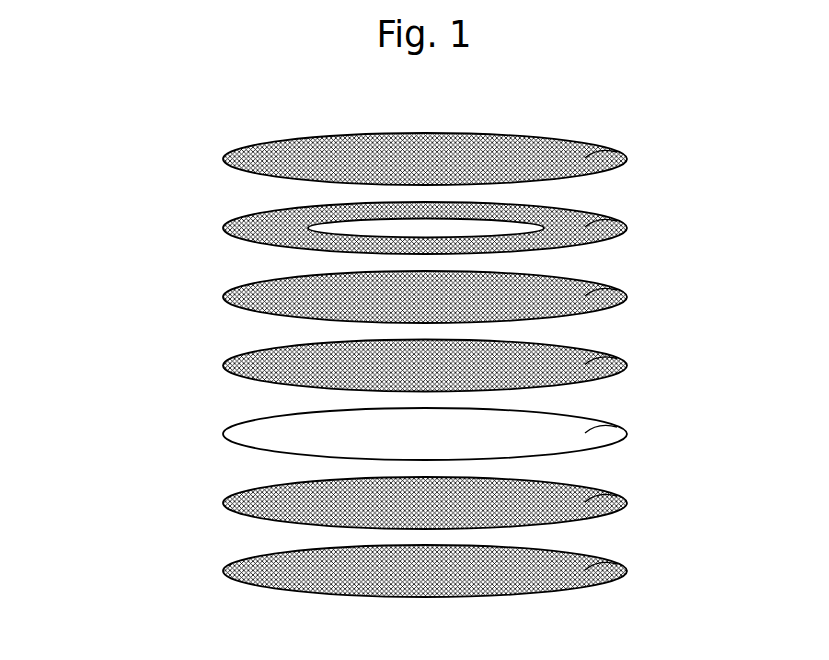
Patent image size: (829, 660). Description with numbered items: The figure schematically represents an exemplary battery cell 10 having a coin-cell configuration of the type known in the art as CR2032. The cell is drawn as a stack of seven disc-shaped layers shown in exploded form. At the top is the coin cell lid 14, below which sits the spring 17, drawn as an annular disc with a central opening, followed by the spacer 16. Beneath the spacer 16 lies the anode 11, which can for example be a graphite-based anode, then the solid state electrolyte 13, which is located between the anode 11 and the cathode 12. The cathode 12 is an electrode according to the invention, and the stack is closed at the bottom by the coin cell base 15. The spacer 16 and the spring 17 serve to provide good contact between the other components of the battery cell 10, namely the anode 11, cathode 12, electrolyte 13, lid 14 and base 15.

The battery cell 10 is at (122, 182).
The coin cell lid 14 is at (627, 155).
The spring 17 is at (627, 224).
The spacer 16 is at (627, 293).
The anode 11 is at (627, 362).
The solid state electrolyte 13 is at (627, 430).
The cathode 12 is at (627, 499).
The coin cell base 15 is at (627, 567).